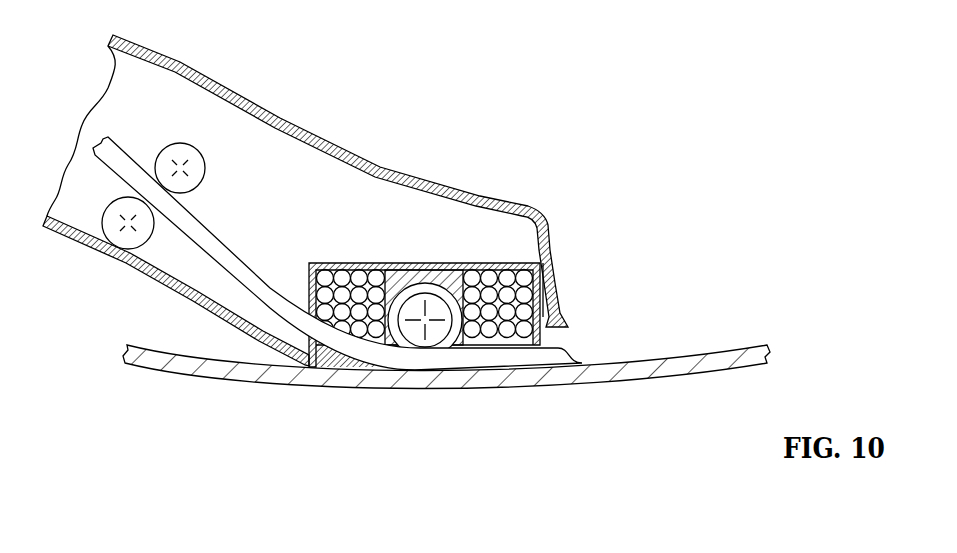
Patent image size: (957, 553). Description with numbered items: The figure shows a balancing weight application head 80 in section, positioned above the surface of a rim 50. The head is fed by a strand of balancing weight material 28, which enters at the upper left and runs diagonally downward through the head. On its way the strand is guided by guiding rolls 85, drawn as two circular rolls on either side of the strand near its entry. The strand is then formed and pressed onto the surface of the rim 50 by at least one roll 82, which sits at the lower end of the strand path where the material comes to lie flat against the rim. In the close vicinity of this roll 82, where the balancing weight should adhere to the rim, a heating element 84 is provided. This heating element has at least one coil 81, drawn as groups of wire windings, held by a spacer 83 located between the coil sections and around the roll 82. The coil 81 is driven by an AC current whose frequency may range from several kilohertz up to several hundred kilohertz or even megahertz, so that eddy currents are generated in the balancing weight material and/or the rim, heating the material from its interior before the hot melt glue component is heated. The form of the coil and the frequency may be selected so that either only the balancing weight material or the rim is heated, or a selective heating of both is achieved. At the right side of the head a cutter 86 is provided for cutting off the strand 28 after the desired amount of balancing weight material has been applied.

The balancing weight application head 80 is at (278, 167).
The guiding rolls 85 is at (177, 160).
The strand of balancing weight material 28 is at (223, 258).
The heating element 84 is at (350, 238).
The spacer 83 is at (417, 273).
The coil 81 is at (492, 277).
The cutter 86 is at (558, 269).
The roll 82 is at (417, 332).
The rim 50 is at (490, 380).